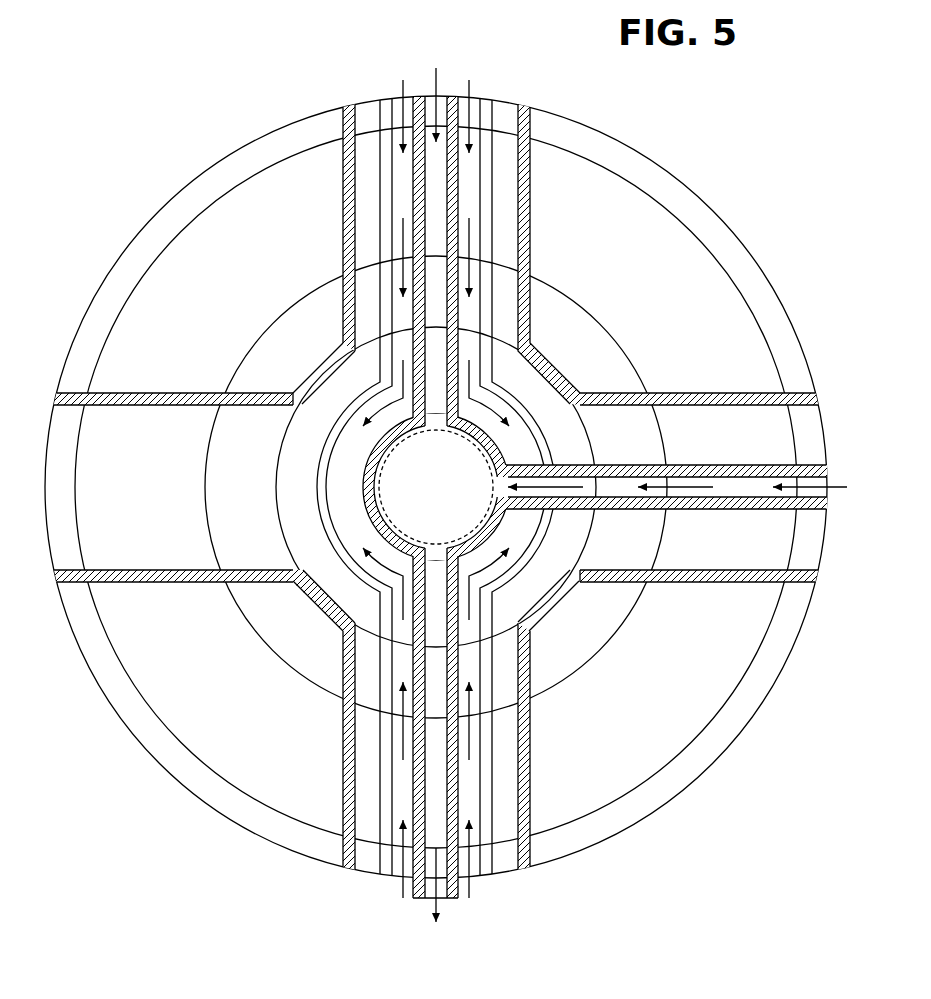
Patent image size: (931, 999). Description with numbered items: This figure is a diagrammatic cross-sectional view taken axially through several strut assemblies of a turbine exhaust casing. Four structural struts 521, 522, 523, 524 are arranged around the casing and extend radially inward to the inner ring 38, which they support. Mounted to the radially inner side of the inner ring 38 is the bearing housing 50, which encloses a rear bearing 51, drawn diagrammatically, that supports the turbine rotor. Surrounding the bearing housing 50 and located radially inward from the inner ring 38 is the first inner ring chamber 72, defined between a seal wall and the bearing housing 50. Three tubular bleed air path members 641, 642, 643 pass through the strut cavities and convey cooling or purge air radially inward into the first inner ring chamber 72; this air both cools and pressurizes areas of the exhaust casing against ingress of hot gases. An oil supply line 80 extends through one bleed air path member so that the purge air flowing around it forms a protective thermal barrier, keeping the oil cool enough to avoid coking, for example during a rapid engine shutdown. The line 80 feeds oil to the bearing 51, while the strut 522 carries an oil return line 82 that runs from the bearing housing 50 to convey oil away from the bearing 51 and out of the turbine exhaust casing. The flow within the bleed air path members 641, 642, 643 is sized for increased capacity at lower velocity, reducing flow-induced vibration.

The bearing housing 50 is at (318, 594).
The strut 521 is at (342, 162).
The strut 522 is at (343, 773).
The strut 523 is at (730, 392).
The strut 524 is at (147, 583).
The inner ring 38 is at (307, 372).
The bleed air path member 641 is at (381, 117).
The bleed air path member 642 is at (379, 827).
The bleed air path member 643 is at (764, 510).
The oil supply line 80 is at (459, 110).
The oil return line 82 is at (452, 900).
The first inner ring chamber 72 is at (343, 468).
The rear bearing 51 is at (500, 521).